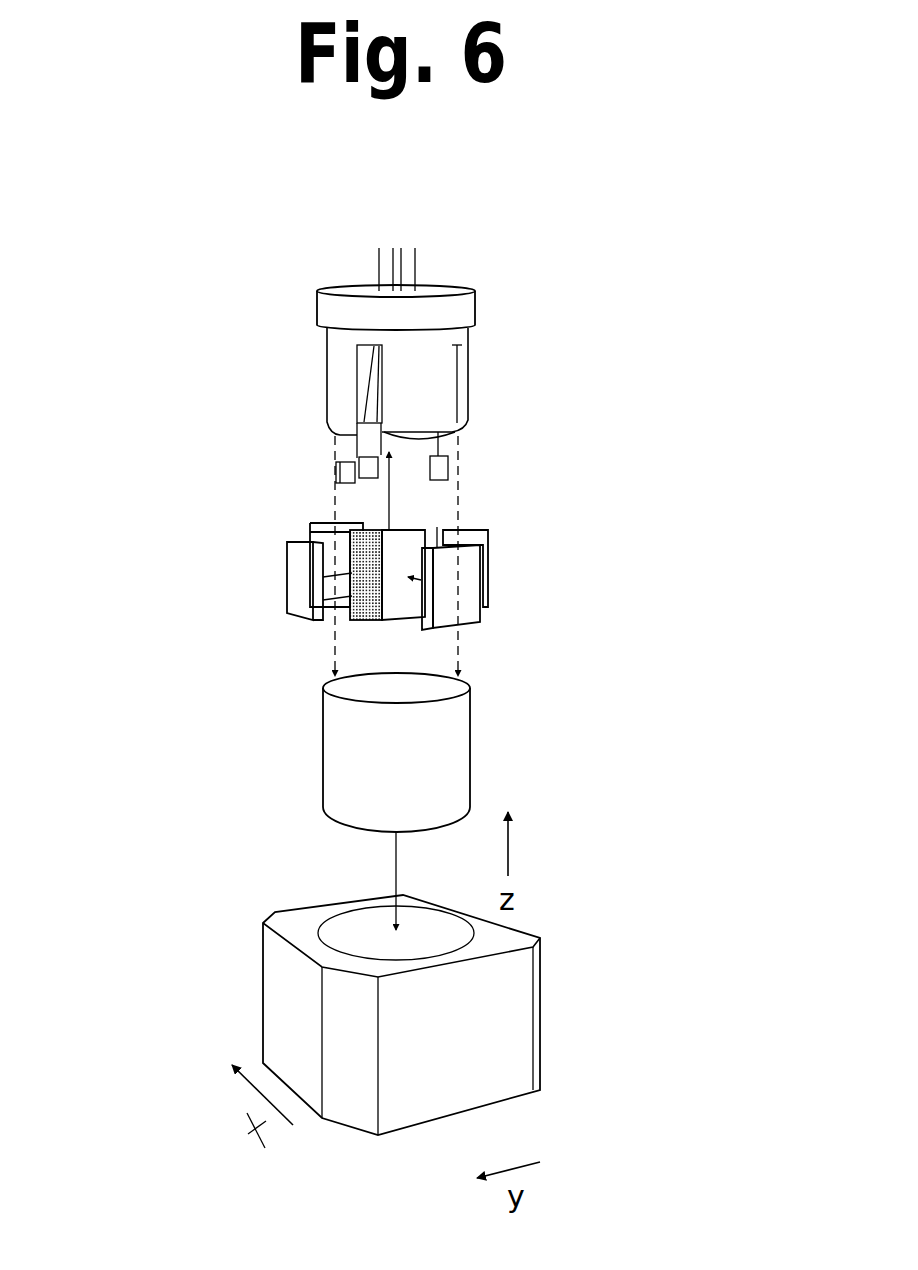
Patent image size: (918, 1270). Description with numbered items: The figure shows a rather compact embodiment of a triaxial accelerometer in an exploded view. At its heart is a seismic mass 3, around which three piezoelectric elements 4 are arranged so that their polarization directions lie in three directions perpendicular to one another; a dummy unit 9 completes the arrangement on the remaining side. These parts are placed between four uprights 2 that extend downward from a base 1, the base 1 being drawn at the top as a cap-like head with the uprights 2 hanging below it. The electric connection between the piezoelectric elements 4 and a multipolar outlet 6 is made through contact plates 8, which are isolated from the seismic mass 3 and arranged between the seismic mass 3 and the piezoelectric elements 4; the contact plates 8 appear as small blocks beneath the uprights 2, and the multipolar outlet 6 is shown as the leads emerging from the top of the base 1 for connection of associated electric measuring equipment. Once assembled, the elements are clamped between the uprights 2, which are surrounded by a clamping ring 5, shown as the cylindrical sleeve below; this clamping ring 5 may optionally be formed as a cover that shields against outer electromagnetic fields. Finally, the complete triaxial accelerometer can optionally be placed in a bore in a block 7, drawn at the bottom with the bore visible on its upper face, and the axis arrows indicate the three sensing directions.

The base 1 is at (467, 307).
The uprights 2 is at (327, 366).
The seismic mass 3 is at (358, 613).
The piezoelectric elements 4 is at (437, 527).
The clamping ring 5 is at (332, 750).
The multipolar outlet 6 is at (376, 268).
The block 7 is at (273, 1048).
The contact plates 8 is at (355, 485).
The dummy unit 9 is at (488, 578).